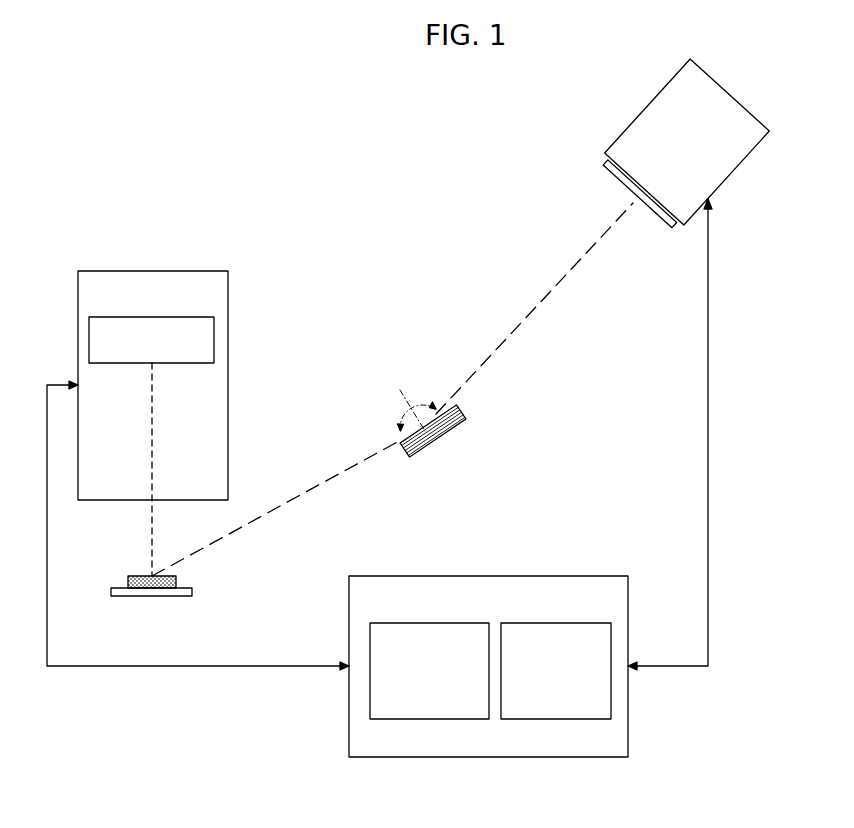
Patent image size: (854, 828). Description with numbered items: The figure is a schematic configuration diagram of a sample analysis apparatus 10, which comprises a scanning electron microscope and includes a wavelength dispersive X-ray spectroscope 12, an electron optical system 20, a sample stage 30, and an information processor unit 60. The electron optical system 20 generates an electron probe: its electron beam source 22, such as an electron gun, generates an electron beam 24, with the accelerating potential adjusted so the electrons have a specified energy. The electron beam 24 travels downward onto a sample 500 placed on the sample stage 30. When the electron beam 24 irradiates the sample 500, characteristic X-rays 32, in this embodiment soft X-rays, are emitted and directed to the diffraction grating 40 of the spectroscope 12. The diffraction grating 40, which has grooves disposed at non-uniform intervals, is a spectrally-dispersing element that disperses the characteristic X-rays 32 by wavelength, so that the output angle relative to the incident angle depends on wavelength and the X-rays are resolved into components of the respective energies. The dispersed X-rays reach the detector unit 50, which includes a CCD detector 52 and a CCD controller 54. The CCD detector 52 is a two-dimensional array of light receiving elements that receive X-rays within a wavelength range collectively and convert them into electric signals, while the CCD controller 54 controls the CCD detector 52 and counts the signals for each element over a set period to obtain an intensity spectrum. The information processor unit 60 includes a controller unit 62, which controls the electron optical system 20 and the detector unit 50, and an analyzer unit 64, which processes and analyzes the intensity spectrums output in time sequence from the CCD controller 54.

The sample analysis apparatus 10 is at (183, 130).
The wavelength dispersive X-ray spectroscope 12 is at (408, 212).
The electron optical system 20 is at (150, 269).
The electron beam source 22 is at (89, 332).
The electron beam 24 is at (150, 391).
The sample stage 30 is at (111, 590).
The characteristic X-rays 32 is at (350, 462).
The diffraction grating 40 is at (467, 410).
The detector unit 50 is at (687, 143).
The CCD detector 52 is at (603, 160).
The CCD controller 54 is at (618, 138).
The information processor unit 60 is at (538, 574).
The controller unit 62 is at (434, 646).
The analyzer unit 64 is at (560, 646).
The sample 500 is at (128, 575).